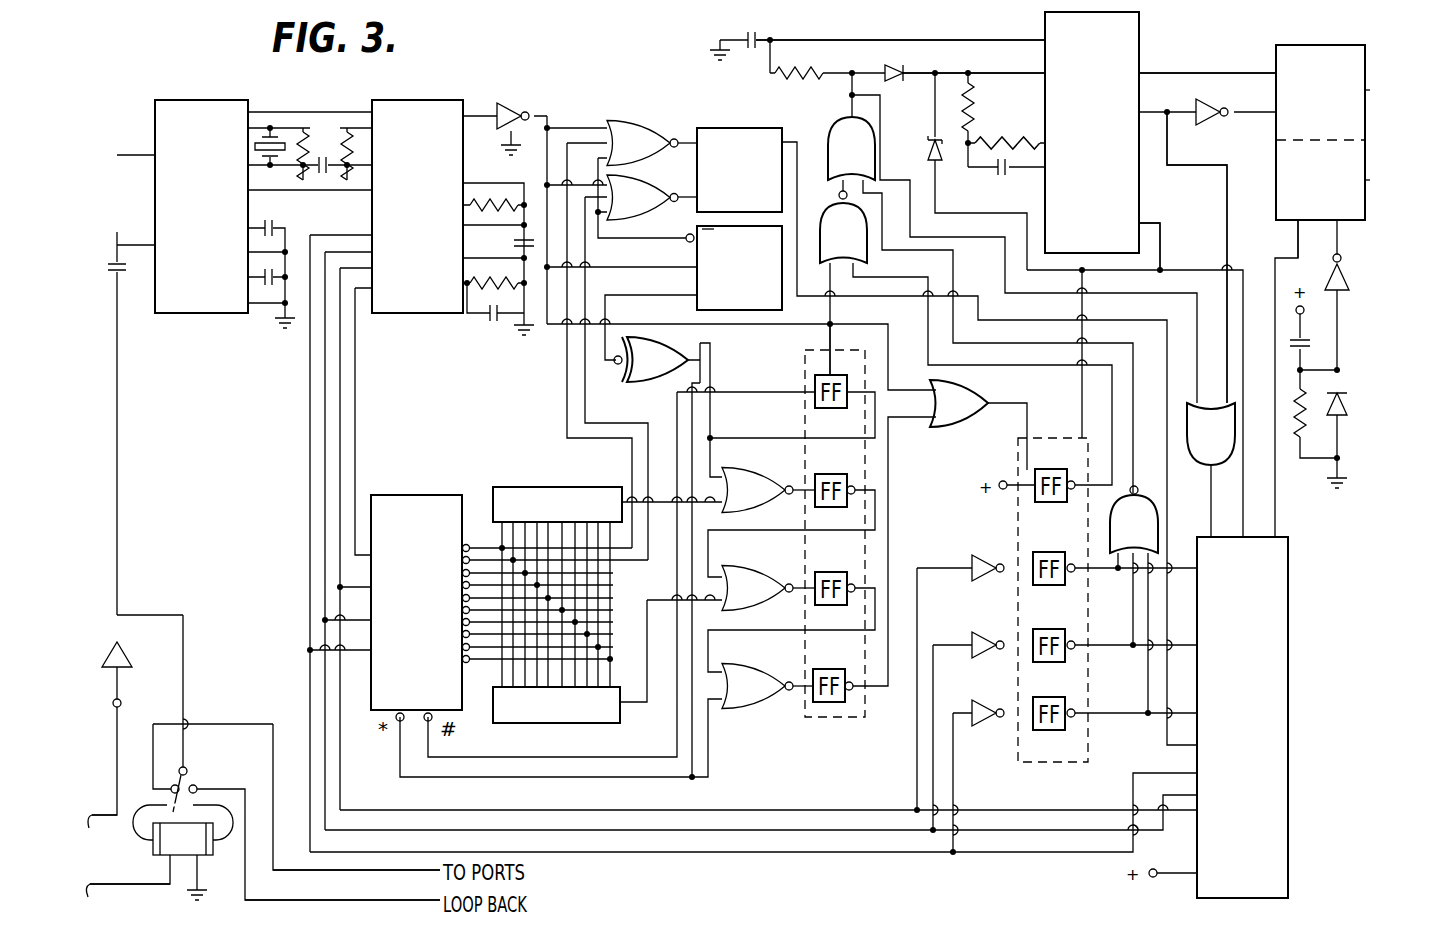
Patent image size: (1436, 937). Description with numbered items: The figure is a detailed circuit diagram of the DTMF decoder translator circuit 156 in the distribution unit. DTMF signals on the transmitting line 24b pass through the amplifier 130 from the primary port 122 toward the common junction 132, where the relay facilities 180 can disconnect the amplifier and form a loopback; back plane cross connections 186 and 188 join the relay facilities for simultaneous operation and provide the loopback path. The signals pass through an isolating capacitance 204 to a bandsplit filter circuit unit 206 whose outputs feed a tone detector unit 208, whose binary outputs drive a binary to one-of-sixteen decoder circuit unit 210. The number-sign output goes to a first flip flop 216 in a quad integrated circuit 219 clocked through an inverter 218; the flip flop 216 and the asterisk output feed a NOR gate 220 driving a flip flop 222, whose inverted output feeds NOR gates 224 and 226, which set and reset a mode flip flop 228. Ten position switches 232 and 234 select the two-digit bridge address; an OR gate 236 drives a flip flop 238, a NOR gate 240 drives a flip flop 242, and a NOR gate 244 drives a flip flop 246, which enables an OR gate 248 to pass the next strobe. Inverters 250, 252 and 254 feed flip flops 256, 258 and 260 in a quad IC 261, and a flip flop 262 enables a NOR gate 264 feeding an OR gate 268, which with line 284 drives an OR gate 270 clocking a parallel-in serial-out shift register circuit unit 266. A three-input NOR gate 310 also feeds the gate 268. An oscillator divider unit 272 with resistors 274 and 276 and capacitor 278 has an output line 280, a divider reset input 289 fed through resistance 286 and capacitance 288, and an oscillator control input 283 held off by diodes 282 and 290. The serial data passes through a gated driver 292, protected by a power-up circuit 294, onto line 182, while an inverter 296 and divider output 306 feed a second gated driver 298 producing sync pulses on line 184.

The DTMF decoder translator circuit 156 is at (166, 78).
The isolating capacitance 204 is at (100, 278).
The bandsplit filter circuit unit 206 is at (210, 313).
The tone detector unit 208 is at (410, 313).
The inverter 218 is at (512, 101).
The NOR gate 224 is at (636, 120).
The NOR gate 226 is at (640, 186).
The mode flip flop 228 is at (710, 120).
The flip flop 222 is at (697, 300).
The NOR gate 220 is at (645, 372).
The quad integrated circuit 219 is at (803, 358).
The first flip flop 216 is at (815, 405).
The OR gate 236 is at (740, 475).
The flip flop 238 is at (840, 478).
The NOR gate 240 is at (738, 572).
The flip flop 242 is at (840, 575).
The NOR gate 244 is at (750, 708).
The flip flop 246 is at (826, 706).
The OR gate 248 is at (952, 425).
The ten position switch 232 is at (528, 486).
The ten position switch 234 is at (570, 723).
The binary to 1-of-16 decoder circuit unit 210 is at (397, 500).
The amplifier 130 is at (126, 655).
The primary port 122 is at (122, 701).
The relay facilities 180 is at (216, 750).
The transmitting line 24b is at (108, 833).
The back plane cross connection 186 is at (130, 903).
The common junction 132 is at (292, 870).
The back plane cross connection 188 is at (355, 900).
The capacitance 288 is at (754, 32).
The serial resistance 286 is at (818, 70).
The diode 290 is at (895, 68).
The oscillator control input 283 is at (1012, 60).
The resistor 274 is at (978, 100).
The resistor 276 is at (998, 135).
The capacitor 278 is at (1006, 174).
The diode 282 is at (930, 142).
The OR gate 268 is at (832, 138).
The NOR gate 264 is at (864, 250).
The oscillator divider unit 272 is at (1140, 35).
The divider reset input 289 is at (957, 40).
The divider output 306 is at (1195, 73).
The inverter 296 is at (1218, 100).
The divider output line 284 is at (1168, 150).
The output line 280 is at (1160, 245).
The back plane cross connect line 184 is at (1367, 90).
The second gated driver 298 is at (1365, 120).
The back plane cross connect line 182 is at (1367, 180).
The gated driver 292 is at (1355, 205).
The power-up circuit 294 is at (1354, 430).
The quad IC 261 is at (1030, 766).
The flip flop 262 is at (1030, 482).
The inverter 250 is at (990, 560).
The flip flop 256 is at (1060, 556).
The inverter 252 is at (998, 637).
The flip flop 258 is at (1040, 636).
The inverter 254 is at (998, 682).
The flip flop 260 is at (1040, 705).
The OR gate 270 is at (1200, 455).
The three-input NOR gate 310 is at (1150, 530).
The parallel-in serial-out shift register circuit unit 266 is at (1290, 636).